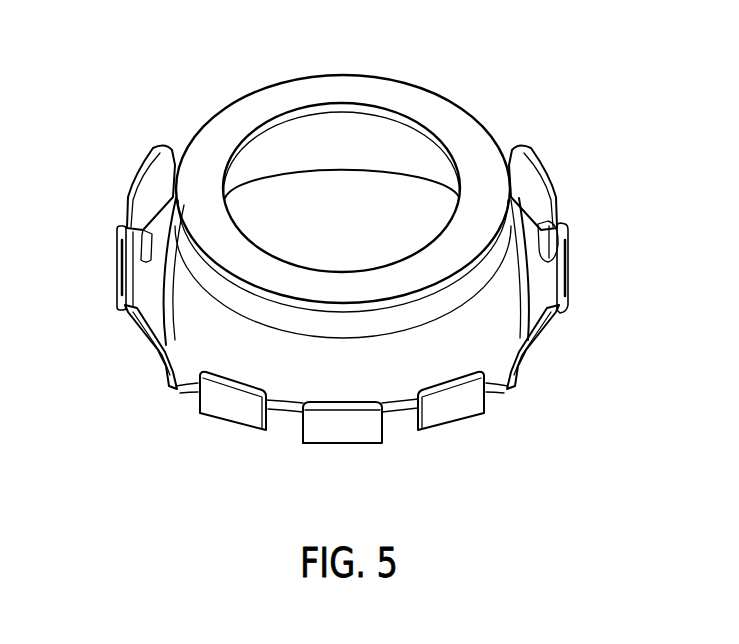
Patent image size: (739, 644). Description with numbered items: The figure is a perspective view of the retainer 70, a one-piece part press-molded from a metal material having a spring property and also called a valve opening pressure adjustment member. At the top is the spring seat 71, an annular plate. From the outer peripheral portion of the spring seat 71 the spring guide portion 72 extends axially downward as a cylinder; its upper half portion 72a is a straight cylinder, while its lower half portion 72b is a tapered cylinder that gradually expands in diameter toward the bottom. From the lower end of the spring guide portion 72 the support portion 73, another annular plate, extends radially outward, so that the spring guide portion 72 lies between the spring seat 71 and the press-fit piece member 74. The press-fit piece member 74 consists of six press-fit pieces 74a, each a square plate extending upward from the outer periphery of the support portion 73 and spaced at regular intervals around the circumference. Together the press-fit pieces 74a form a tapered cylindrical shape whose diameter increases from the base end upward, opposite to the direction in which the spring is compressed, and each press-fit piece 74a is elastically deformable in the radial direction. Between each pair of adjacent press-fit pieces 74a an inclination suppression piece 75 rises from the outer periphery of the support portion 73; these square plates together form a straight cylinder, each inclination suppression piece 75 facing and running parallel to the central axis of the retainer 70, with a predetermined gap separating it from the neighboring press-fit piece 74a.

The retainer 70 is at (347, 258).
The spring seat 71 is at (303, 90).
The spring guide portion 72 is at (577, 254).
The upper half portion 72a is at (505, 243).
The lower half portion 72b is at (505, 298).
The support portion 73 is at (145, 287).
The press-fit piece member 74 is at (343, 311).
The press-fit piece 74a is at (568, 400).
The inclination suppression piece 75 is at (118, 245).